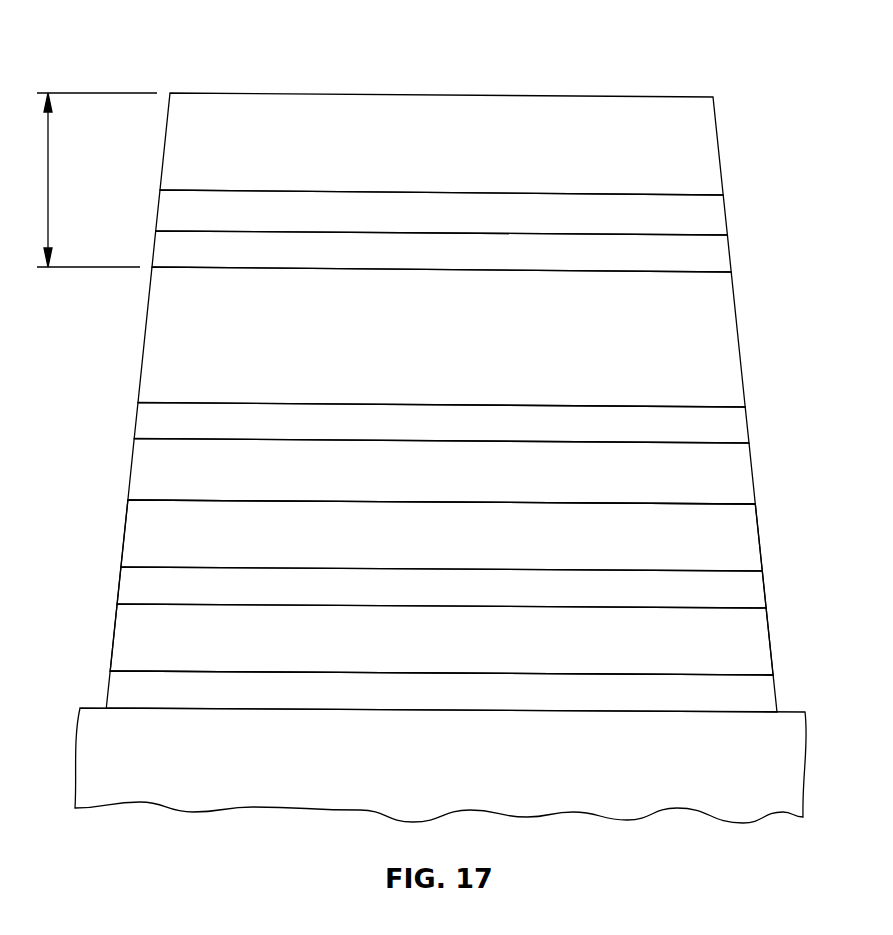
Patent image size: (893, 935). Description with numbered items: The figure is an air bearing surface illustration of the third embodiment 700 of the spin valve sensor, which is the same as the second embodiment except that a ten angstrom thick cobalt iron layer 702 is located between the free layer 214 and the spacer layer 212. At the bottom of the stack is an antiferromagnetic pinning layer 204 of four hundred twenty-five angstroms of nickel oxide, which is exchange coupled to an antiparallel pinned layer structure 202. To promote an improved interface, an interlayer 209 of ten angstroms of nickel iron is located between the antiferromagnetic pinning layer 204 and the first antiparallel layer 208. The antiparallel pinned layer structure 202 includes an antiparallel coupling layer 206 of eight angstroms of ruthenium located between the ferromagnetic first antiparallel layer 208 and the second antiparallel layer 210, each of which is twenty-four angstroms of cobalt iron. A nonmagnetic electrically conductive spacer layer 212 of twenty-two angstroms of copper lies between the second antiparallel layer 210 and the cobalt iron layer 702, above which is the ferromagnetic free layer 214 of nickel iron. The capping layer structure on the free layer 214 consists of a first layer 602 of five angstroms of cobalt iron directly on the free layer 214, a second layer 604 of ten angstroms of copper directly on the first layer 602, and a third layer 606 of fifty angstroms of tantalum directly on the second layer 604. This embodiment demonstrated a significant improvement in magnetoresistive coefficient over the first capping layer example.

The third embodiment spin valve sensor 700 is at (632, 58).
The third layer 606 is at (710, 155).
The second layer 604 is at (720, 212).
The first layer 602 is at (720, 253).
The free layer 214 is at (730, 343).
The cobalt iron layer 702 is at (737, 424).
The spacer layer 212 is at (740, 471).
The second antiparallel layer 210 is at (745, 533).
The antiparallel coupling layer 206 is at (750, 588).
The first antiparallel layer 208 is at (755, 638).
The interlayer 209 is at (763, 689).
The antiferromagnetic pinning layer 204 is at (738, 810).
The antiparallel pinned layer structure 202 is at (423, 587).